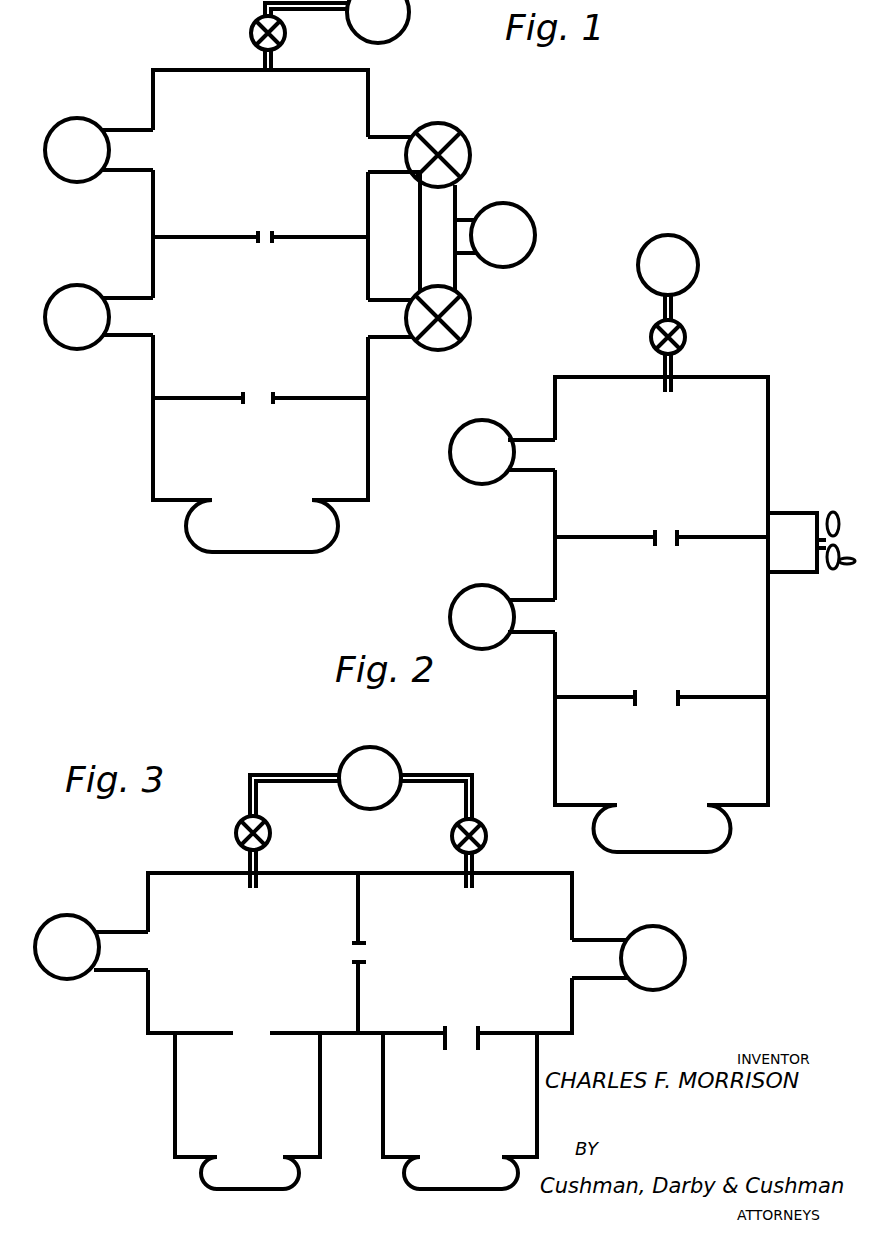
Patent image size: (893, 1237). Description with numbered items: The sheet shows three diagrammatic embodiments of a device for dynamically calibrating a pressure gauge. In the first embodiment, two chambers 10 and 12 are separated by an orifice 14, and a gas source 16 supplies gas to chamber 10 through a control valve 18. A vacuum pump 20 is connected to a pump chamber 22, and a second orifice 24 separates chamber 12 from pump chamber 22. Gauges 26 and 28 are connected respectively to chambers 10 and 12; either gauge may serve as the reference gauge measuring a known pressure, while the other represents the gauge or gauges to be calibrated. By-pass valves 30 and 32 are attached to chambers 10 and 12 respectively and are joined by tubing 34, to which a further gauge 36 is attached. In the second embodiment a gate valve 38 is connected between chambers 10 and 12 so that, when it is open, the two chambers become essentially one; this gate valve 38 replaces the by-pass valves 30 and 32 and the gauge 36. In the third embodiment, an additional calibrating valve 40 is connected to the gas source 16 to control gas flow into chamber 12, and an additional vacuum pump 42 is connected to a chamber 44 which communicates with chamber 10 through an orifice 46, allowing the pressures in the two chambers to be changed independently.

In FIG. 1, the chamber 10 is at (302, 148).
In FIG. 2, the chamber 10 is at (688, 457).
In FIG. 3, the chamber 10 is at (242, 932).
In FIG. 1, the chamber 12 is at (287, 320).
In FIG. 2, the chamber 12 is at (689, 617).
In FIG. 3, the chamber 12 is at (494, 953).
In FIG. 1, the orifice 14 is at (260, 258).
In FIG. 2, the orifice 14 is at (661, 554).
In FIG. 3, the orifice 14 is at (384, 953).
In FIG. 1, the gas source 16 is at (400, 21).
In FIG. 2, the gas source 16 is at (689, 265).
In FIG. 3, the gas source 16 is at (350, 786).
In FIG. 1, the control valve 18 is at (277, 36).
In FIG. 2, the control valve 18 is at (692, 343).
In FIG. 3, the control valve 18 is at (288, 831).
In FIG. 1, the vacuum pump 20 is at (285, 533).
In FIG. 2, the vacuum pump 20 is at (690, 835).
In FIG. 3, the vacuum pump 20 is at (430, 1177).
In FIG. 1, the pump chamber 22 is at (289, 449).
In FIG. 2, the pump chamber 22 is at (691, 751).
In FIG. 3, the pump chamber 22 is at (489, 1095).
In FIG. 1, the orifice 24 is at (260, 421).
In FIG. 2, the orifice 24 is at (661, 719).
In FIG. 3, the orifice 24 is at (418, 1054).
In FIG. 1, the gauge 26 is at (99, 129).
In FIG. 2, the gauge 26 is at (502, 436).
In FIG. 3, the gauge 26 is at (91, 971).
In FIG. 1, the gauge 28 is at (99, 294).
In FIG. 2, the gauge 28 is at (502, 601).
In FIG. 3, the gauge 28 is at (628, 977).
In FIG. 1, the by-pass valve 30 is at (440, 149).
In FIG. 1, the by-pass valve 32 is at (429, 336).
In FIG. 1, the tubing 34 is at (411, 232).
In FIG. 1, the gauge 36 is at (518, 233).
In FIG. 2, the gate valve 38 is at (811, 524).
In FIG. 3, the calibrating valve 40 is at (464, 831).
In FIG. 3, the vacuum pump 42 is at (216, 1179).
In FIG. 3, the chamber 44 is at (211, 1095).
In FIG. 3, the orifice 46 is at (284, 1056).